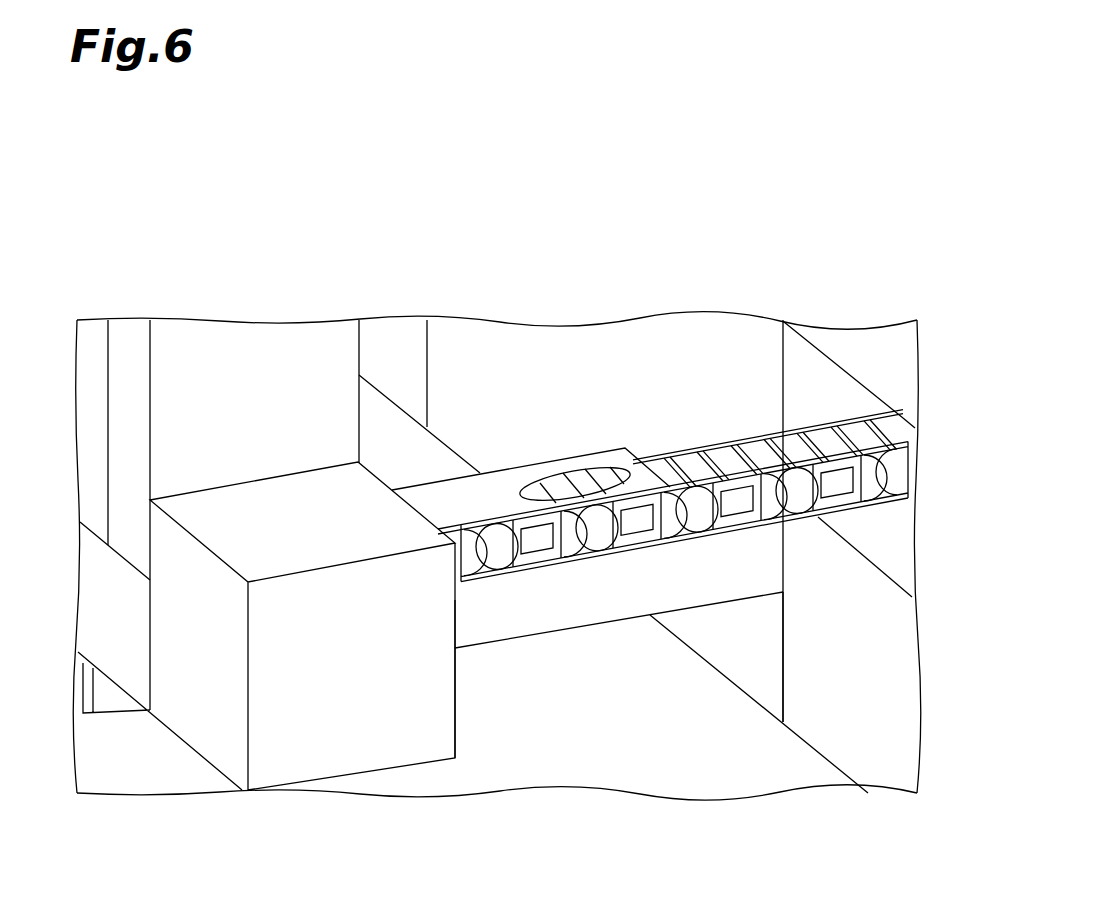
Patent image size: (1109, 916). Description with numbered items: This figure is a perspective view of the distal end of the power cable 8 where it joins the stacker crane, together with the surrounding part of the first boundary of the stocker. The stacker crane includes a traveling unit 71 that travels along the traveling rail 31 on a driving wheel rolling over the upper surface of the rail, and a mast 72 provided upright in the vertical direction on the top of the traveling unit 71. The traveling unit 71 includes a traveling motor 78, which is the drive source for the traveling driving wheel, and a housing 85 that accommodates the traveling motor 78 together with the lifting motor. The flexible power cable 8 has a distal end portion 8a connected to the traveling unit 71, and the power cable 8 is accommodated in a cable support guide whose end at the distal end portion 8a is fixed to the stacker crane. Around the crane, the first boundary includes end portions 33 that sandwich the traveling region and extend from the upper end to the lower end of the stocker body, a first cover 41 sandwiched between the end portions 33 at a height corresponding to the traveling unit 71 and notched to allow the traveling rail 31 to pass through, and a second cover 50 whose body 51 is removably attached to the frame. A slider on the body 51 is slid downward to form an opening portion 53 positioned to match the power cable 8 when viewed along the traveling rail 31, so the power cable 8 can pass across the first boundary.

The mast 72 is at (227, 353).
The end portions 33 is at (380, 353).
The distal end portion 8a is at (413, 517).
The first cover 41 is at (568, 350).
The power cable 8 is at (687, 433).
The opening portion 53 is at (833, 377).
The second cover 50 is at (957, 583).
The traveling motor 78 is at (333, 727).
The housing 85 is at (462, 722).
The traveling rail 31 is at (605, 595).
The body 51 is at (850, 680).
The traveling unit 71 is at (238, 812).